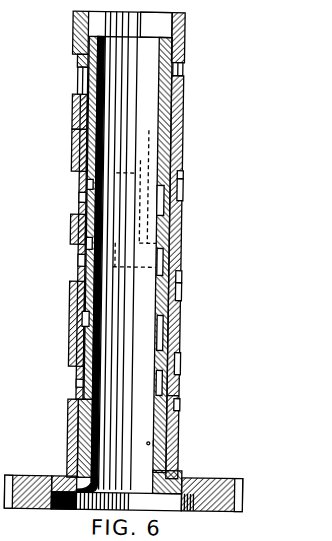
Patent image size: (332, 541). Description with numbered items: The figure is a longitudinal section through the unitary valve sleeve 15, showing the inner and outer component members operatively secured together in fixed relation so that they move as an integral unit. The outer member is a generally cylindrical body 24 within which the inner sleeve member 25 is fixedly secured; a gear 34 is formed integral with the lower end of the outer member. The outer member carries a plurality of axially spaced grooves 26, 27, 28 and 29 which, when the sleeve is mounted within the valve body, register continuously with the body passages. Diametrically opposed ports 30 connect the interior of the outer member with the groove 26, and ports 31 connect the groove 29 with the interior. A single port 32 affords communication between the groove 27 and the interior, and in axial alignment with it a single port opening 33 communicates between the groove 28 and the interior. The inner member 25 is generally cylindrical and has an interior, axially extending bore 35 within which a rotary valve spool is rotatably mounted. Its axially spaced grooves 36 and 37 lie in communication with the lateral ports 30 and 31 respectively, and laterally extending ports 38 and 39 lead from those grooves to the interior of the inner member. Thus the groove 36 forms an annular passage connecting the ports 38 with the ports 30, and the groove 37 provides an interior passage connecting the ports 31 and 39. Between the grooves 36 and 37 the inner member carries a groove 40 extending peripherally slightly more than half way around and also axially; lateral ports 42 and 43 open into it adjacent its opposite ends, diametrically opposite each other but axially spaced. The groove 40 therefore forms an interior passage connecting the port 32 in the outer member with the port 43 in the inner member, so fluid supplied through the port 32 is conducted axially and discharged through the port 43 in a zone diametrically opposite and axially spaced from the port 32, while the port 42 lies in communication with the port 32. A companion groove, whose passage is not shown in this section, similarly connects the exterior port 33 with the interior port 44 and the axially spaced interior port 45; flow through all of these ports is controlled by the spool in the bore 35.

The valve sleeve 15 is at (178, 424).
The outer member 24 is at (78, 462).
The inner sleeve member 25 is at (88, 442).
The groove 26 is at (176, 96).
The groove 27 is at (179, 178).
The groove 28 is at (182, 283).
The groove 29 is at (180, 398).
The ports 30 is at (80, 84).
The ports 31 is at (78, 383).
The port 32 is at (83, 198).
The port opening 33 is at (80, 262).
The gear 34 is at (213, 488).
The bore 35 is at (152, 443).
The groove 36 is at (76, 102).
The groove 37 is at (163, 335).
The ports 38 is at (94, 137).
The ports 39 is at (75, 330).
The groove 40 is at (90, 183).
The port 42 is at (83, 213).
The port 43 is at (160, 258).
The port 44 is at (88, 240).
The port 45 is at (161, 200).